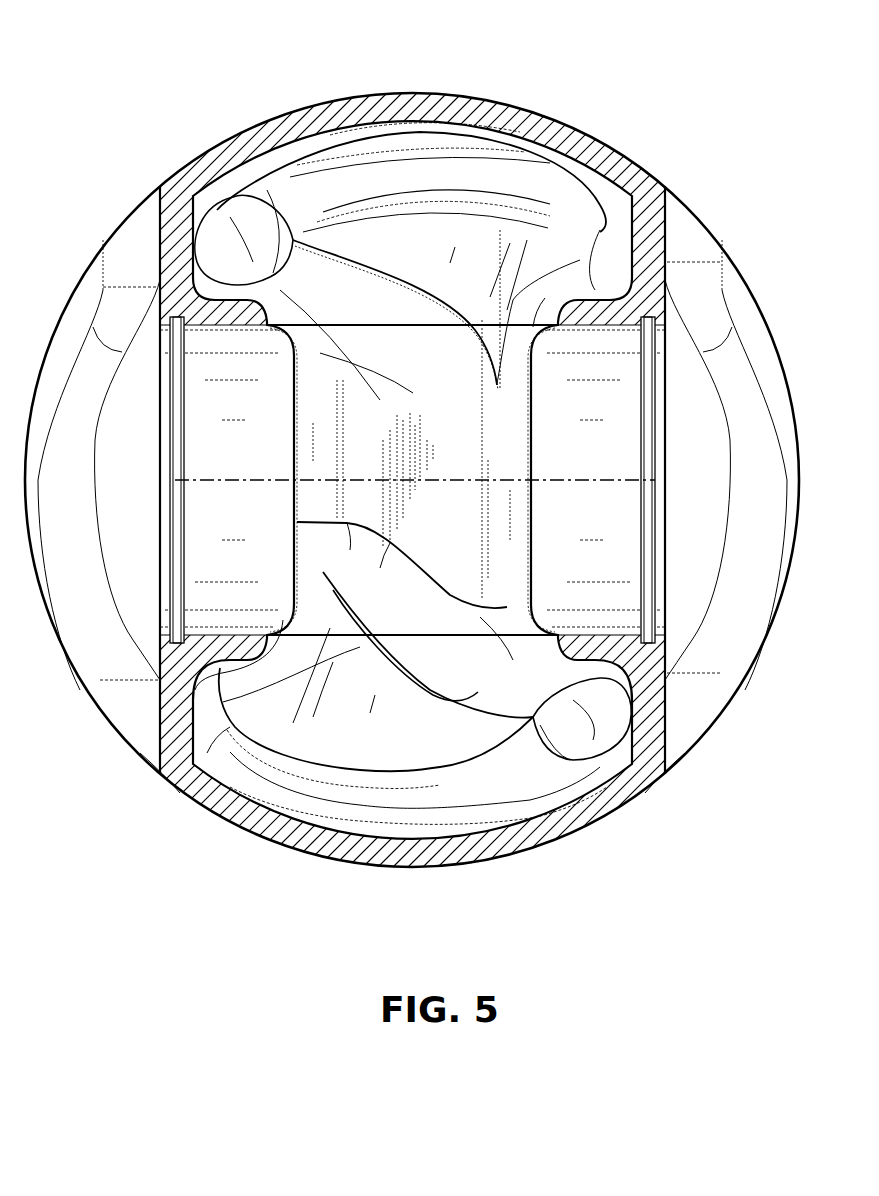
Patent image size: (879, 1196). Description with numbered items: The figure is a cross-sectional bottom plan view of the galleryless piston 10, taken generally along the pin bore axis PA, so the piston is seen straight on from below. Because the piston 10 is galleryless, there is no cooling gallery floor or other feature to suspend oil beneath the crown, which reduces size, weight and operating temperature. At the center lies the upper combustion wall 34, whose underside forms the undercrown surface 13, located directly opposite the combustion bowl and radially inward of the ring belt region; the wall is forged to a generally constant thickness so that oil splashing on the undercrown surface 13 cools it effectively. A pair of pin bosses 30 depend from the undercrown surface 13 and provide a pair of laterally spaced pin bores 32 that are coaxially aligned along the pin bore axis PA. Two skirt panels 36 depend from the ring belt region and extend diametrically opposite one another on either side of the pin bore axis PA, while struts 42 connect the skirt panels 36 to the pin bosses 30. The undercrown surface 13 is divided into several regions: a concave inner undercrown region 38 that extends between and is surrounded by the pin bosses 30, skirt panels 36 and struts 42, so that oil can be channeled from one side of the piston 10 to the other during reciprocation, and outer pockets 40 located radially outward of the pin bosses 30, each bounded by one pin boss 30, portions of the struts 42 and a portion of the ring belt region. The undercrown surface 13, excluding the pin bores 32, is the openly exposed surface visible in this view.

The galleryless piston 10 is at (666, 118).
The undercrown surface 13 is at (418, 268).
The pin bosses 30 is at (160, 637).
The pin bores 32 is at (223, 600).
The upper combustion wall 34 is at (355, 377).
The skirt panels 36 is at (430, 92).
The inner undercrown region 38 is at (400, 395).
The outer pockets 40 is at (124, 475).
The struts 42 is at (160, 254).
The pin bore axis PA is at (500, 482).